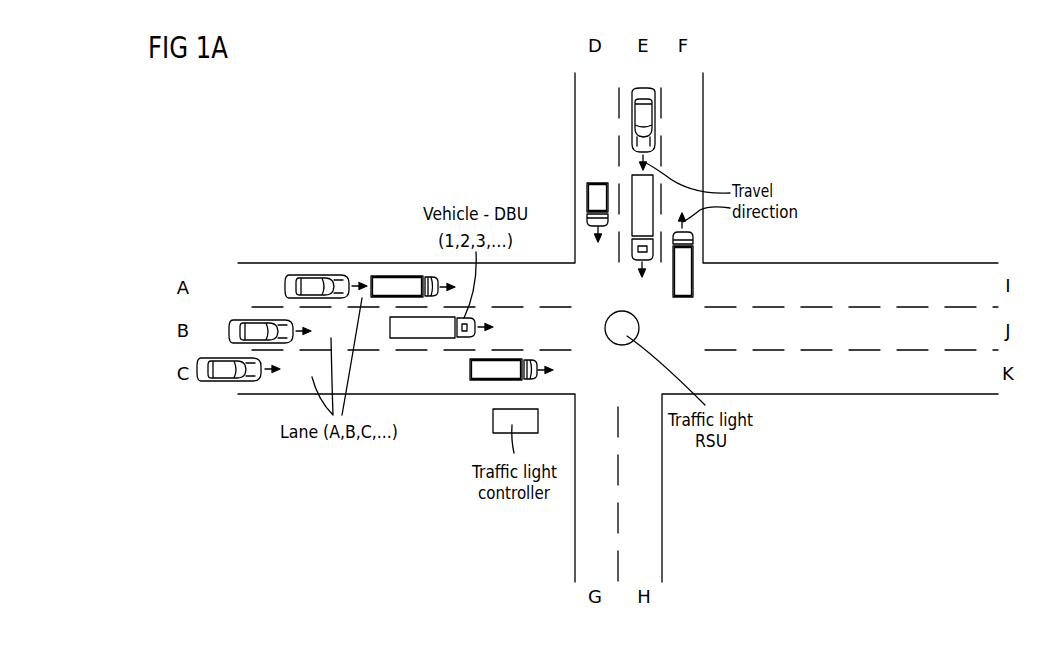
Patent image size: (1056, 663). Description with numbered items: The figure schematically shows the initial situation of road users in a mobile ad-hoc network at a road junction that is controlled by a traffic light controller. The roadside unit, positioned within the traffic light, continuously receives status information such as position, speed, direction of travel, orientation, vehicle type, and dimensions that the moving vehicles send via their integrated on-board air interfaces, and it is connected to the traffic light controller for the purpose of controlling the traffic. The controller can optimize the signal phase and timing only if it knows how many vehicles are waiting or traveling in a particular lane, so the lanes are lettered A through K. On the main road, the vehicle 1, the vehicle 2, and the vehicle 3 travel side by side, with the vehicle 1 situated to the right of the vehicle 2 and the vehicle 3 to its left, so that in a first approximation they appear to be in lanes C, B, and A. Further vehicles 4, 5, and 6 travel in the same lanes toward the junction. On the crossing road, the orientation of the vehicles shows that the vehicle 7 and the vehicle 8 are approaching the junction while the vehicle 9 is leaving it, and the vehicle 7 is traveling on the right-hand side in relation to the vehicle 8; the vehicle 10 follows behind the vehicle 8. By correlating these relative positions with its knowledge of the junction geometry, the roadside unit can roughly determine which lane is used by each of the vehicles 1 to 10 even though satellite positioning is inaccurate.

The vehicle 1 is at (226, 372).
The vehicle 2 is at (258, 330).
The vehicle 3 is at (313, 284).
The vehicle 4 is at (398, 285).
The vehicle 5 is at (411, 330).
The vehicle 6 is at (513, 365).
The vehicle 7 is at (593, 191).
The vehicle 8 is at (645, 201).
The vehicle 9 is at (683, 260).
The vehicle 10 is at (640, 118).